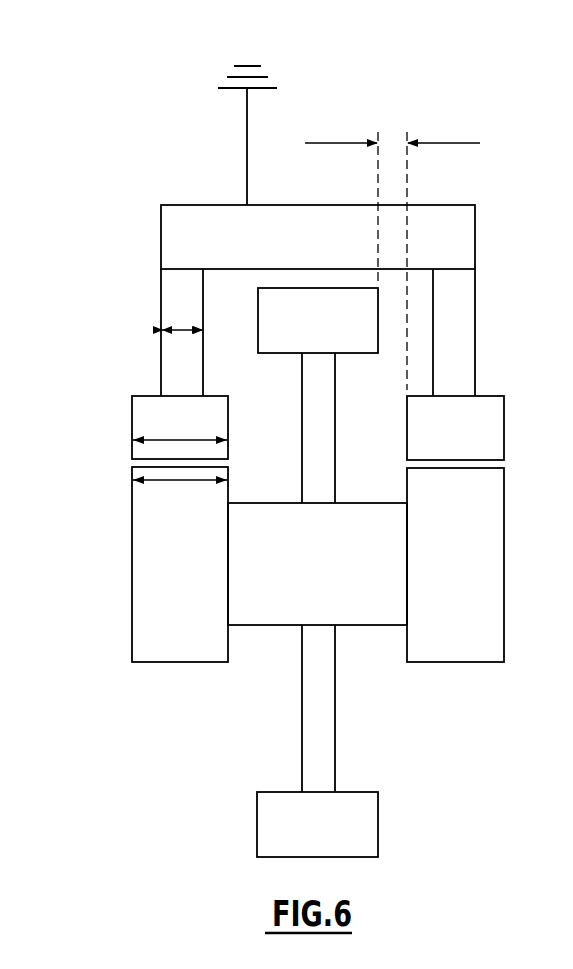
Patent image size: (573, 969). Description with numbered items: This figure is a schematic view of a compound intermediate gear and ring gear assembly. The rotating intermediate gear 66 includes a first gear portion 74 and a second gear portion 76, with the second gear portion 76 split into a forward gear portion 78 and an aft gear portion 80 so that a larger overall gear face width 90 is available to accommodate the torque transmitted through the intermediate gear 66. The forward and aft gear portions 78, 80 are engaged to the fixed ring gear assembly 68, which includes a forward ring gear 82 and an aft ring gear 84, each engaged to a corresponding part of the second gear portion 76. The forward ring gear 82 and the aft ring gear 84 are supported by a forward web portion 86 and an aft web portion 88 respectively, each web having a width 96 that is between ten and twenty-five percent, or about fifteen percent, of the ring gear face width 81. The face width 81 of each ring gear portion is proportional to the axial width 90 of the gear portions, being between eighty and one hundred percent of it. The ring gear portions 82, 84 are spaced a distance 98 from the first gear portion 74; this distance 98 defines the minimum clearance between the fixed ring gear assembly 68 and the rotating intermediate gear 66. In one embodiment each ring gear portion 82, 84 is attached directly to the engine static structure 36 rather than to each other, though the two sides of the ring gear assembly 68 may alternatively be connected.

The engine static structure 36 is at (266, 77).
The intermediate gear 66 is at (168, 772).
The ring gear assembly 68 is at (210, 206).
The first gear portion 74 is at (345, 340).
The second gear portion 76 is at (397, 700).
The forward gear portion 78 is at (157, 643).
The aft gear portion 80 is at (478, 645).
The face width 81 is at (190, 440).
The forward ring gear 82 is at (145, 418).
The aft ring gear 84 is at (483, 427).
The forward web portion 86 is at (170, 368).
The aft web portion 88 is at (457, 326).
The gear face width 90 is at (165, 483).
The width 96 is at (178, 326).
The distance 98 is at (460, 143).